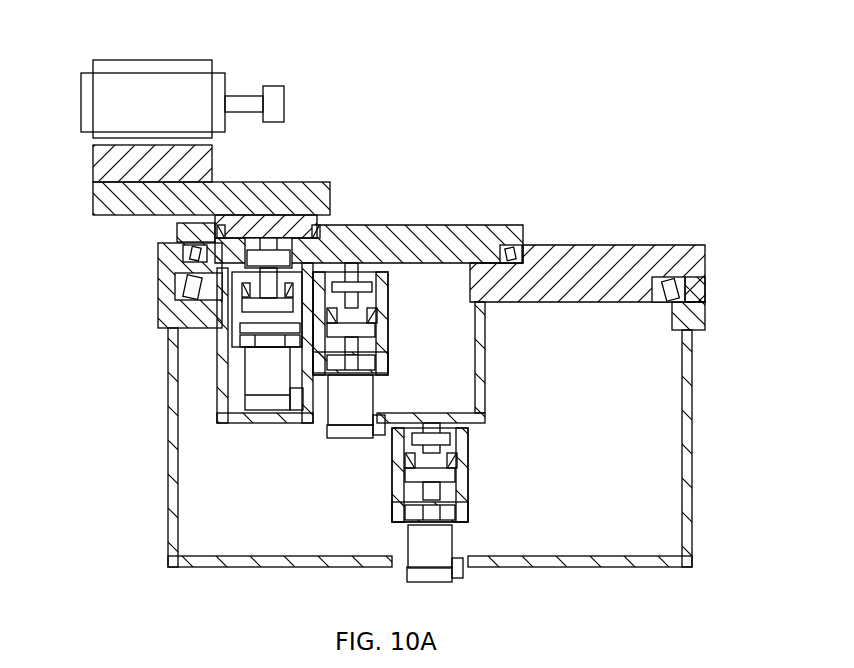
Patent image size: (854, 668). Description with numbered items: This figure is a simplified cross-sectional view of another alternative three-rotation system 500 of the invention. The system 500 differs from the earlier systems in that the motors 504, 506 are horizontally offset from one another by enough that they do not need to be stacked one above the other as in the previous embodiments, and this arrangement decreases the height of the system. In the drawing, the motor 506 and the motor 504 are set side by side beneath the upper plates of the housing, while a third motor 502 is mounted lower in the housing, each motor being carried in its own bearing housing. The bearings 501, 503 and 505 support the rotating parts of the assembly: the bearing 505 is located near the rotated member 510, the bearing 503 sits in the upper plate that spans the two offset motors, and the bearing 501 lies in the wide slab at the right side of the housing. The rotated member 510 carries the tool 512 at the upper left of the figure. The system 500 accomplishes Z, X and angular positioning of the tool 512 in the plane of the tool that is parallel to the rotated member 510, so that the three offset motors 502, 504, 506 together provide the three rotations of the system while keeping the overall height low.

The system 500 is at (648, 188).
The bearing 501 is at (705, 288).
The motor 502 is at (430, 582).
The bearing 503 is at (510, 244).
The motor 504 is at (360, 438).
The bearing 505 is at (332, 215).
The motor 506 is at (243, 372).
The rotated member 510 is at (93, 193).
The tool 512 is at (160, 60).